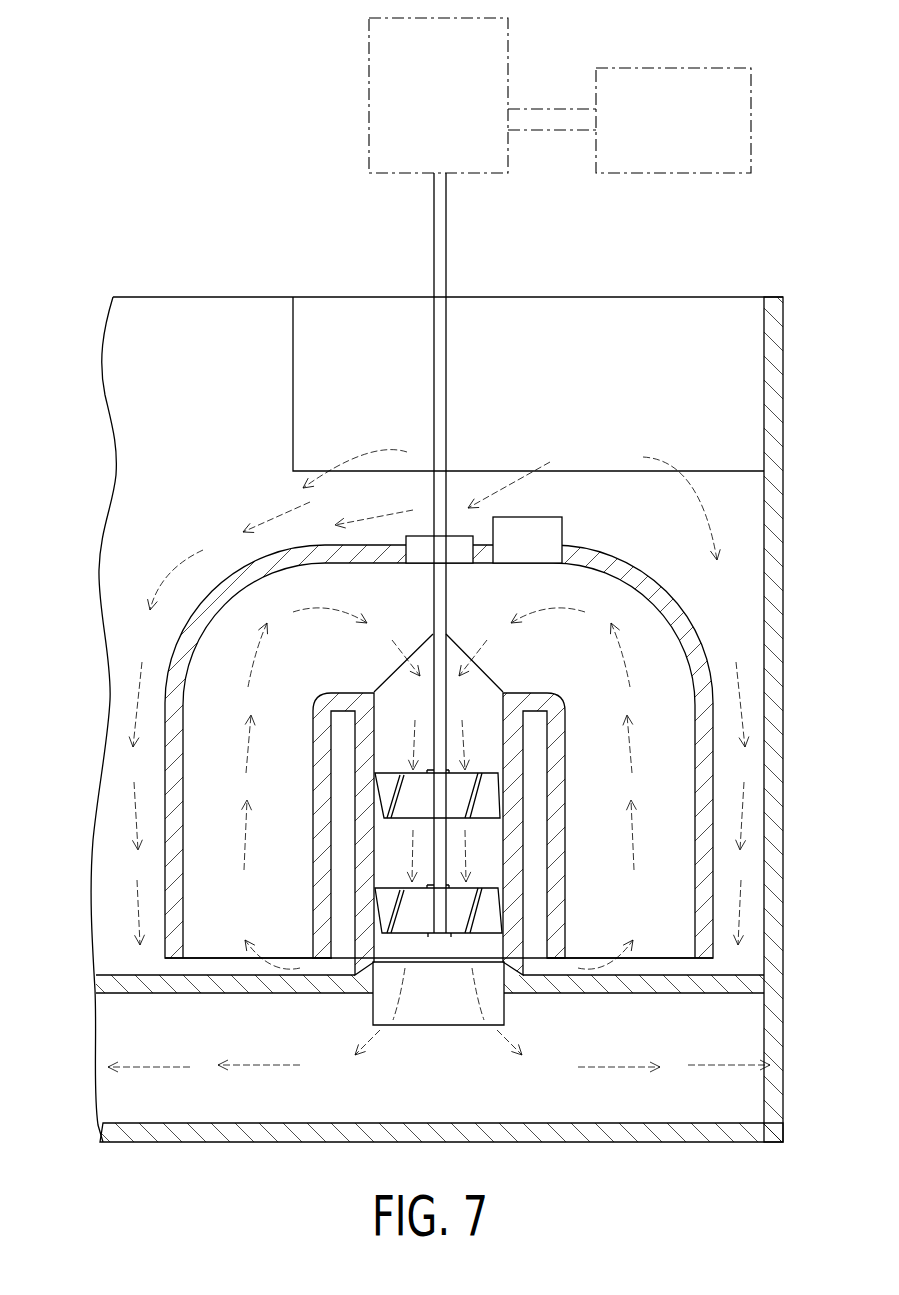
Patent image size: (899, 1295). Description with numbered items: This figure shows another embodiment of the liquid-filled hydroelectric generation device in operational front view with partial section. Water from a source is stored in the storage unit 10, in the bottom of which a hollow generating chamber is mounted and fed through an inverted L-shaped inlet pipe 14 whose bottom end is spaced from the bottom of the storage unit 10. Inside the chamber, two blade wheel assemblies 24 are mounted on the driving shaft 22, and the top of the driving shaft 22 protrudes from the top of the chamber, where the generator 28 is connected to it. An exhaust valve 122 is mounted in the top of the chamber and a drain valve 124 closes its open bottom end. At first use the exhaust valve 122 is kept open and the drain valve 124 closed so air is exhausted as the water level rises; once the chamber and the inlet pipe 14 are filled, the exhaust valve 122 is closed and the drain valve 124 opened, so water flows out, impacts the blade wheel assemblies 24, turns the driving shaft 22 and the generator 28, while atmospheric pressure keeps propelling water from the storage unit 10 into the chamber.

The storage unit 10 is at (225, 545).
The inlet pipe 14 is at (180, 883).
The driving shaft 22 is at (446, 236).
The blade wheel assembly 24 is at (398, 866).
The generator 28 is at (720, 118).
The exhaust valve 122 is at (536, 528).
The drain valve 124 is at (442, 1017).